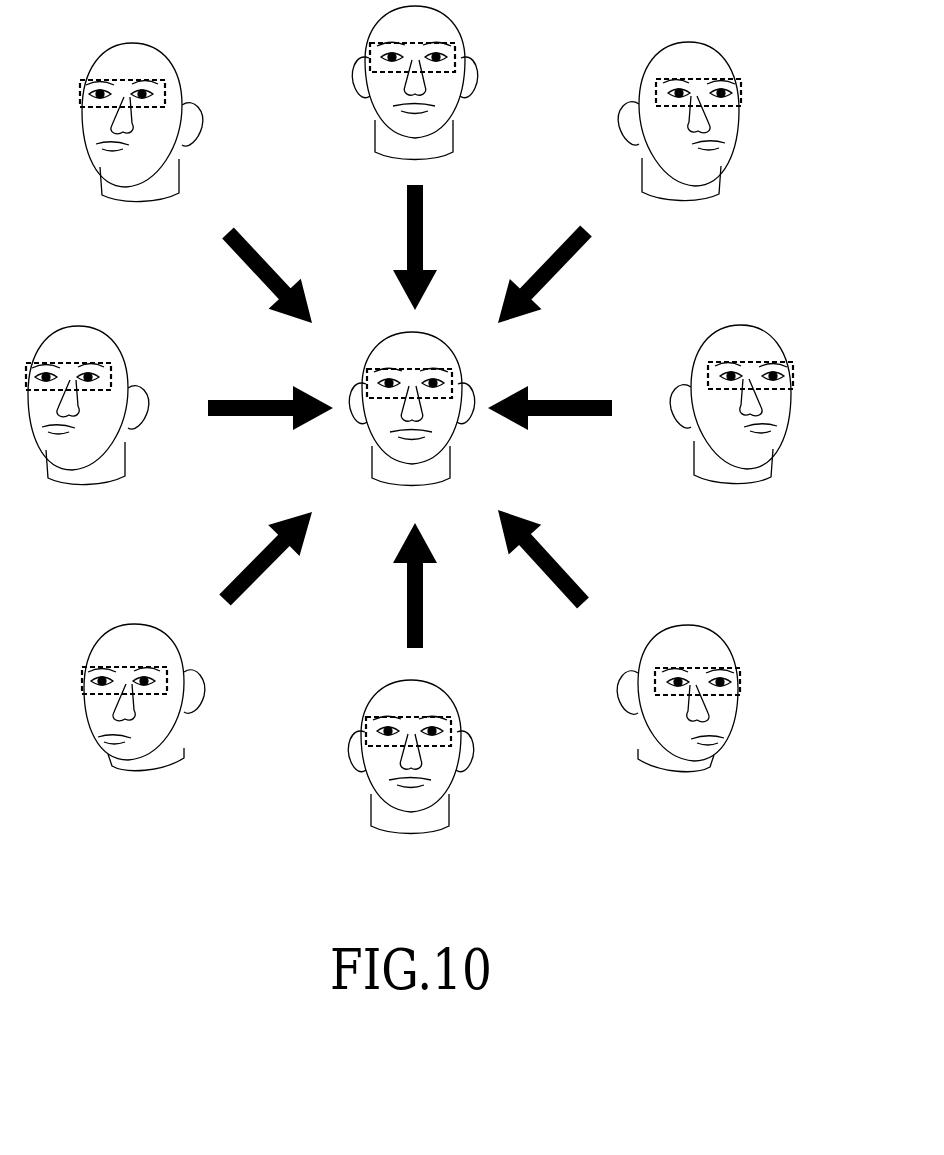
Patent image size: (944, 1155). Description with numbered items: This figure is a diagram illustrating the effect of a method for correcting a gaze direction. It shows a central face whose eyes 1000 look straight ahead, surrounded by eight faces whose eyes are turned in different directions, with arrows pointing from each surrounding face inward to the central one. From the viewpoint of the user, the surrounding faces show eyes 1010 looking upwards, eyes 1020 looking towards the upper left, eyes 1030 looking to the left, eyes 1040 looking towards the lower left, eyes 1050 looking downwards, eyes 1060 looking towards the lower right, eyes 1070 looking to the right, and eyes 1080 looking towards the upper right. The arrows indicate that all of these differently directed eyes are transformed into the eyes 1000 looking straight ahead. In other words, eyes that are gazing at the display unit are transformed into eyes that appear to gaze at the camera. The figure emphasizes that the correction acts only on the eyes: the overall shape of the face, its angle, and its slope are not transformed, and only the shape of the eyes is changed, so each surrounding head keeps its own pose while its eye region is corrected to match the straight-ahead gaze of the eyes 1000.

The eyes looking straight ahead 1000 is at (452, 382).
The eyes looking upwards 1010 is at (458, 54).
The eyes looking towards the upper left 1020 is at (733, 92).
The eyes looking to the left 1030 is at (795, 380).
The eyes looking towards the lower left 1040 is at (738, 676).
The eyes looking downwards 1050 is at (452, 730).
The eyes looking towards the lower right 1060 is at (170, 674).
The eyes looking to the right 1070 is at (112, 378).
The eyes looking towards the upper right 1080 is at (168, 88).